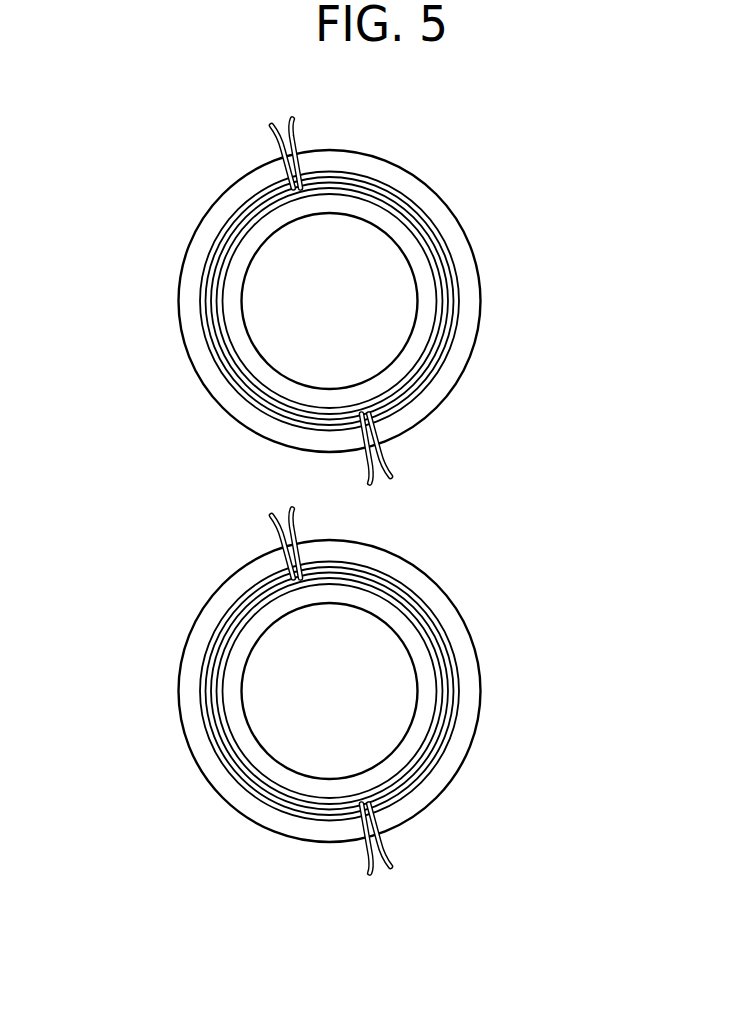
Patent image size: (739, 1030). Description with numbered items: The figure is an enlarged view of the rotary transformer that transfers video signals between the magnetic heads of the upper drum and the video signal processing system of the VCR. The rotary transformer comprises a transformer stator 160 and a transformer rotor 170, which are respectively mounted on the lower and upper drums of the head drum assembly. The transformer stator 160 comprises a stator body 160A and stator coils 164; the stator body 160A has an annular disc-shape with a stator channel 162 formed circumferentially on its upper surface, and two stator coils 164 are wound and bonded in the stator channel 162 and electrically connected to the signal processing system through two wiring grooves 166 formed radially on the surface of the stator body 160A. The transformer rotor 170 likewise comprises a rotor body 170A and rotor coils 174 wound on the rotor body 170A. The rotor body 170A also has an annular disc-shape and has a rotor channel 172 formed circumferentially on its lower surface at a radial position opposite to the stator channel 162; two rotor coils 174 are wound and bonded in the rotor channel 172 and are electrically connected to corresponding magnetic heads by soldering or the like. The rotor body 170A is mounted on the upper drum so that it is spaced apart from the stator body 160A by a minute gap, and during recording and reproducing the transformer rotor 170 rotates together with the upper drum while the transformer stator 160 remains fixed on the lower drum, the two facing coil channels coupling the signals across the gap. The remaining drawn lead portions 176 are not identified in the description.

The transformer stator 160 is at (304, 681).
The stator body 160A is at (340, 670).
The stator channel 162 is at (393, 691).
The stator coils 164 is at (368, 533).
The wiring grooves 166 is at (221, 707).
The transformer rotor 170 is at (304, 291).
The rotor body 170A is at (389, 177).
The rotor channel 172 is at (461, 292).
The rotor coils 174 is at (296, 133).
The first coil lead wires 176 is at (359, 447).